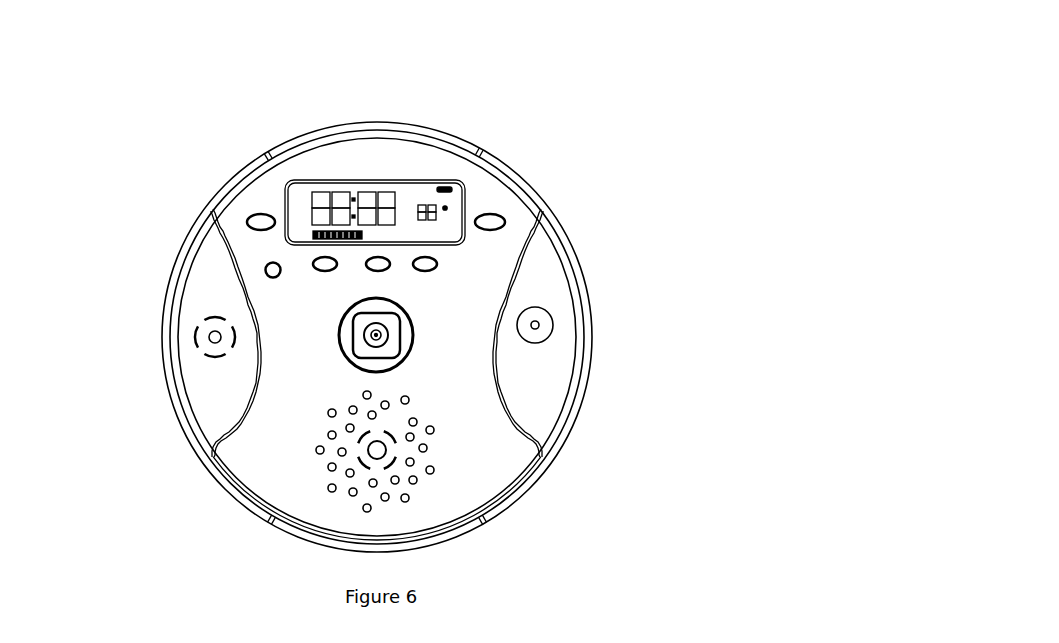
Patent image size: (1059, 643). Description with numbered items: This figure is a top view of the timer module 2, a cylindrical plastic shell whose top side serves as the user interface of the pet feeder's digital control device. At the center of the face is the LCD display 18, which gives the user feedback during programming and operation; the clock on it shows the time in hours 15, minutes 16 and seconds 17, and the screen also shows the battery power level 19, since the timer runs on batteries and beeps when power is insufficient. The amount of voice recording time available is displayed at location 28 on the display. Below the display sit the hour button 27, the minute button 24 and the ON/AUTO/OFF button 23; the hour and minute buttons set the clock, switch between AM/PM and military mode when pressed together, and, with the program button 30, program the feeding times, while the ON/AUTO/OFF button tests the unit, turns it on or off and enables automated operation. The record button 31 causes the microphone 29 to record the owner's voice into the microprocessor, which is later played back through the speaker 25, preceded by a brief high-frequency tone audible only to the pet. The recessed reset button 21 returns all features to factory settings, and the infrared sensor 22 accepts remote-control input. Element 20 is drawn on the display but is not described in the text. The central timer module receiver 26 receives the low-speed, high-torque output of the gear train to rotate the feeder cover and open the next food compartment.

The timer module 2 is at (235, 175).
The hours 15 is at (330, 225).
The minutes 16 is at (360, 192).
The seconds 17 is at (418, 210).
The LCD display 18 is at (426, 181).
The power level 19 is at (452, 188).
The mode indicator 20 is at (447, 208).
The reset button 21 is at (505, 222).
The infrared sensor 22 is at (553, 325).
The ON/AUTO/OFF button 23 is at (437, 264).
The minute button 24 is at (390, 264).
The speaker 25 is at (400, 465).
The timer module receiver 26 is at (339, 327).
The hour button 27 is at (313, 264).
The recording time location 28 is at (322, 239).
The microphone 29 is at (197, 348).
The program button 30 is at (265, 280).
The record button 31 is at (247, 228).